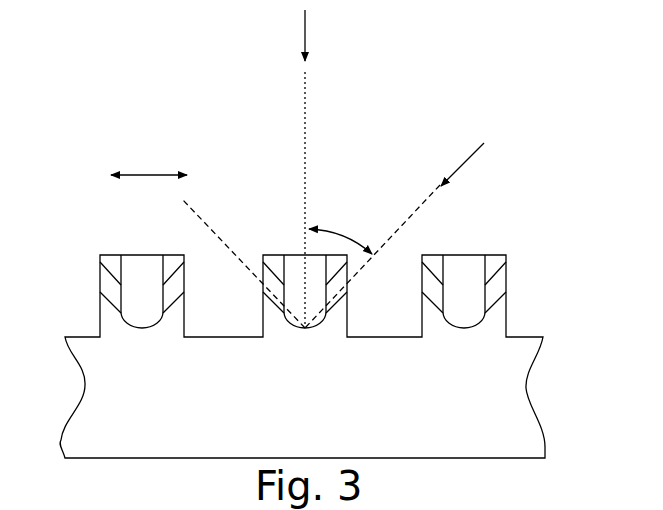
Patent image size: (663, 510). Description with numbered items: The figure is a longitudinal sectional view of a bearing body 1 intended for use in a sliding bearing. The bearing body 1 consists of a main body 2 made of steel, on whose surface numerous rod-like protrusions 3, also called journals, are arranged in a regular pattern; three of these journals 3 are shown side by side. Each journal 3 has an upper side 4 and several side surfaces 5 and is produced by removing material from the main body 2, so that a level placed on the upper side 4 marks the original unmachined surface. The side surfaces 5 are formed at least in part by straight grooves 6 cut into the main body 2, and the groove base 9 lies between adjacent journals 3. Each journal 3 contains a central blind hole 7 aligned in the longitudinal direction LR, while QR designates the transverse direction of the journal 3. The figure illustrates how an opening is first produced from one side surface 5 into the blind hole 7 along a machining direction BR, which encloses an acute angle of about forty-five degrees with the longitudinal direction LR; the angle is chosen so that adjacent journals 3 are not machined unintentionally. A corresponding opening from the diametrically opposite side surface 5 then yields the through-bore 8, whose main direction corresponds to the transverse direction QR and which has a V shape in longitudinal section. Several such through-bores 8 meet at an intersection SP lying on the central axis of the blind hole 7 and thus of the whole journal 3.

The bearing body 1 is at (115, 93).
The main body 2 is at (527, 392).
The rod-like protrusion (journal) 3 is at (497, 255).
The upper side 4 is at (436, 251).
The side surface 5 is at (507, 310).
The groove 6 is at (213, 301).
The blind hole 7 is at (143, 277).
The through-bore 8 is at (117, 290).
The groove base 9 is at (387, 329).
The longitudinal direction LR is at (307, 32).
The machining direction BR is at (465, 172).
The intersection SP is at (304, 319).
The transverse direction QR is at (149, 160).